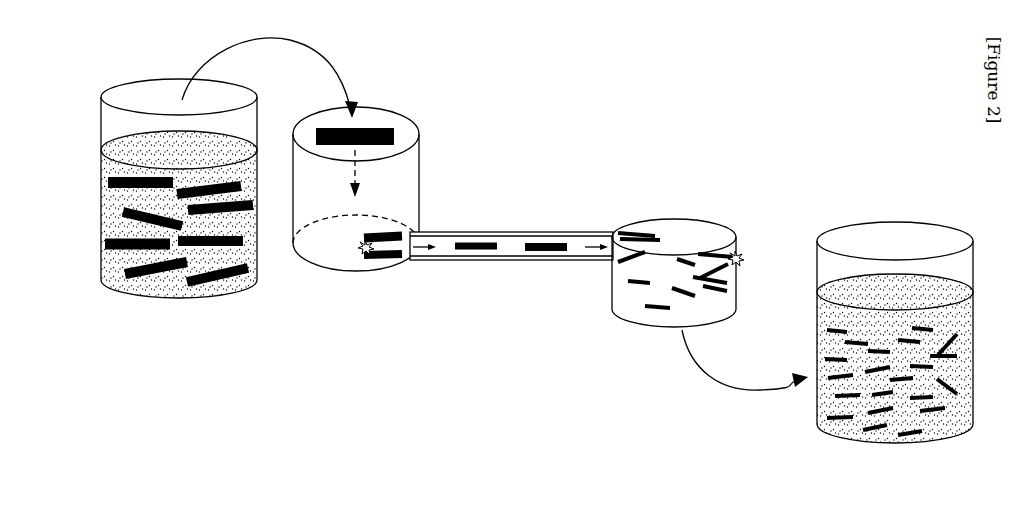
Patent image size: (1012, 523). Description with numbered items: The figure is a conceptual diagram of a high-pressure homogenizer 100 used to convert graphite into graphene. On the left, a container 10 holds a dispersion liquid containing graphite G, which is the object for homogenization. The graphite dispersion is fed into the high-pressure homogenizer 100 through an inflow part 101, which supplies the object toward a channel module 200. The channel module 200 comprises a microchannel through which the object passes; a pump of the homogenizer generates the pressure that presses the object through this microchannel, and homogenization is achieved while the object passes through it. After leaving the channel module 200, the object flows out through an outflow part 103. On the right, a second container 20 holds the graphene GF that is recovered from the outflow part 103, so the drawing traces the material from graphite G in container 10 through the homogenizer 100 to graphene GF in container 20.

The container 10 is at (178, 300).
The graphite G is at (107, 240).
The high-pressure homogenizer 100 is at (518, 222).
The inflow part 101 is at (382, 128).
The channel module 200 is at (518, 262).
The outflow part 103 is at (638, 327).
The container 20 is at (905, 218).
The graphene GF is at (837, 418).